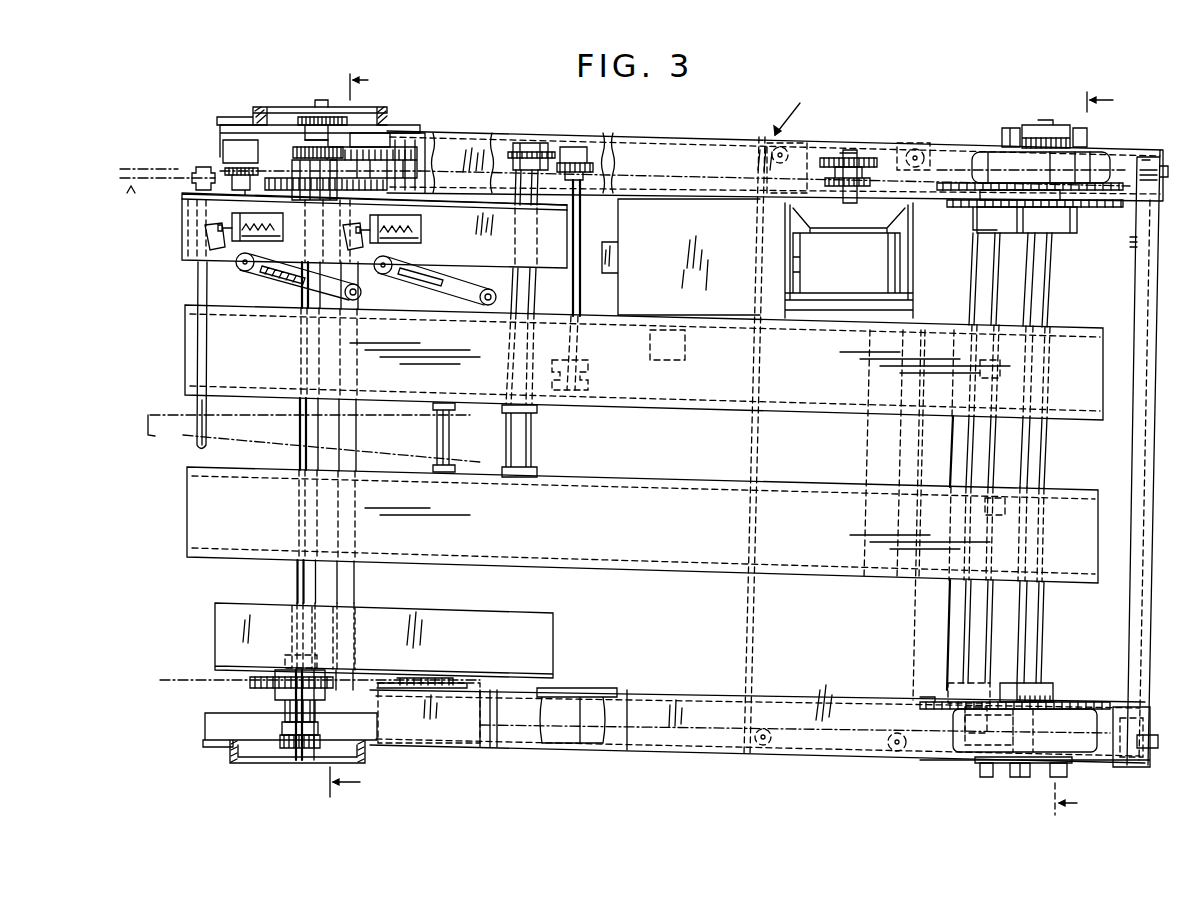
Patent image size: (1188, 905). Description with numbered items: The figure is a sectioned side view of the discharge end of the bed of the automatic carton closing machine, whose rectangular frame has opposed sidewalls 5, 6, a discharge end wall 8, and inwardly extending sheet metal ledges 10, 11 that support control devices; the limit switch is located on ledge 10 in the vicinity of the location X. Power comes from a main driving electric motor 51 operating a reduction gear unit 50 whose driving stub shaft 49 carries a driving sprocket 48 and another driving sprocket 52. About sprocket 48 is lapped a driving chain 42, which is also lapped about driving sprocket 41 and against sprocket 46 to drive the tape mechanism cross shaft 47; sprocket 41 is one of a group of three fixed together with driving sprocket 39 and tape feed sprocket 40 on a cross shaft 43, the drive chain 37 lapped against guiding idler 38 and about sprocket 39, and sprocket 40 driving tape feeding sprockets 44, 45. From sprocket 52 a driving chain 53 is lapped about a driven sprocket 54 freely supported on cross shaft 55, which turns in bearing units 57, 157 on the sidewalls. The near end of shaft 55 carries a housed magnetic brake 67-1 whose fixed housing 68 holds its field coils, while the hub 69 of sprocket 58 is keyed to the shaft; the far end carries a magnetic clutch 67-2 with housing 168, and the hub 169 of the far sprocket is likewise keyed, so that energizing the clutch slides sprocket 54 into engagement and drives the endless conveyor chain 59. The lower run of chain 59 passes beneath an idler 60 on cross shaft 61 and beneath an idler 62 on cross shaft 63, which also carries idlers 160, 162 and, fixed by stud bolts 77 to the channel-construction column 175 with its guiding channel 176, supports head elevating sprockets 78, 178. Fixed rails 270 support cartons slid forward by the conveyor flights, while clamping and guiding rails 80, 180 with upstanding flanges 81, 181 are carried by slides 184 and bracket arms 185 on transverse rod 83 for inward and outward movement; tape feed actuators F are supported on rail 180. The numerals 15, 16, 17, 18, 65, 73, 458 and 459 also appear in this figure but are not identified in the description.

The sidewall 5 is at (682, 760).
The sidewall 6 is at (860, 150).
The end wall 8 is at (1143, 610).
The ledge 10 is at (818, 760).
The ledge 11 is at (745, 147).
The bearing housing 15 is at (236, 760).
The bearing 16 is at (255, 757).
The section line 17- 17 is at (337, 434).
The section line 18- 18 is at (1072, 453).
The drive chain 37 is at (269, 160).
The guiding idler 38 is at (222, 165).
The driving sprocket 39 is at (385, 193).
The tape feed sprocket 40 is at (350, 150).
The driving sprocket 41 is at (378, 130).
The driving chain 42 is at (513, 143).
The cross shaft 43 is at (345, 580).
The sprocket 44 is at (373, 169).
The sprocket 45 is at (598, 170).
The sprocket 46 is at (545, 150).
The cross shaft 47 is at (533, 448).
The driving sprocket 48 is at (868, 165).
The driving stub shaft 49 is at (847, 155).
The reduction gear unit 50 is at (843, 266).
The main driving electric motor 51 is at (662, 296).
The driving sprocket 52 is at (812, 186).
The driving chain 53 is at (905, 172).
The driven sprocket 54 is at (1122, 165).
The cross shaft 55 is at (1052, 310).
The bearing unit 57 is at (1008, 775).
The sprocket 58 is at (1090, 704).
The endless conveyor chain 59 is at (180, 655).
The idler 60 is at (925, 702).
The cross shaft 61 is at (982, 645).
The idler 62 is at (256, 683).
The cross shaft 63 is at (298, 578).
The housing 65 is at (445, 690).
The magnetic brake 67-1 is at (978, 762).
The magnetic clutch 67-2 is at (1089, 163).
The housing 68 is at (1045, 722).
The hub 69 is at (1040, 685).
The hub 73 is at (1072, 196).
The stud bolt 77 is at (315, 100).
The sprocket 78 is at (282, 757).
The rail 80 is at (553, 632).
The upstanding flange 81 is at (440, 590).
The transverse rod 83 is at (200, 445).
The bearing unit 157 is at (1030, 128).
The idler 160 is at (940, 200).
The idler 162 is at (280, 182).
The housing 168 is at (995, 152).
The hub 169 is at (1020, 218).
The column 175 is at (382, 118).
The guiding channel 176 is at (258, 120).
The sprocket 178 is at (292, 122).
The rail 180 is at (575, 275).
The upstanding flange 181 is at (463, 270).
The slide 184 is at (188, 262).
The bracket arm 185 is at (196, 186).
The fixed rail 270 is at (186, 328).
The rack 458 is at (1112, 205).
The arrow 459 is at (133, 199).
The tape feed actuator F is at (290, 227).
The location X is at (446, 740).